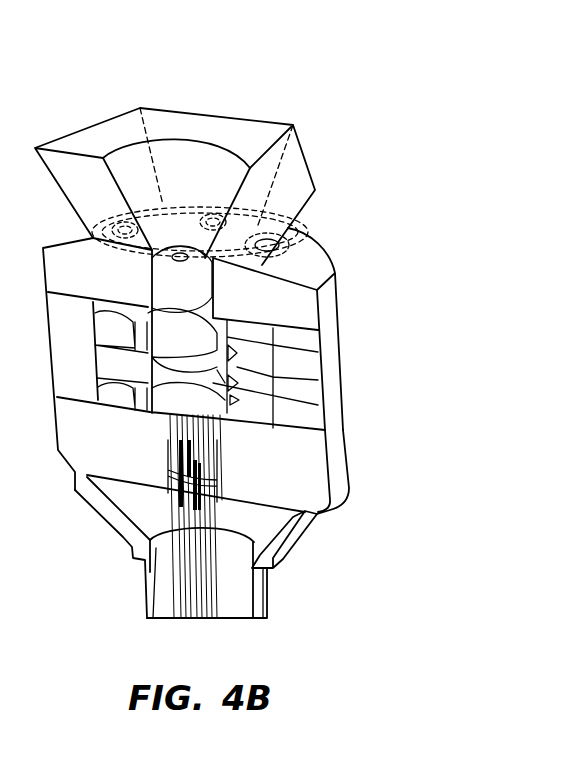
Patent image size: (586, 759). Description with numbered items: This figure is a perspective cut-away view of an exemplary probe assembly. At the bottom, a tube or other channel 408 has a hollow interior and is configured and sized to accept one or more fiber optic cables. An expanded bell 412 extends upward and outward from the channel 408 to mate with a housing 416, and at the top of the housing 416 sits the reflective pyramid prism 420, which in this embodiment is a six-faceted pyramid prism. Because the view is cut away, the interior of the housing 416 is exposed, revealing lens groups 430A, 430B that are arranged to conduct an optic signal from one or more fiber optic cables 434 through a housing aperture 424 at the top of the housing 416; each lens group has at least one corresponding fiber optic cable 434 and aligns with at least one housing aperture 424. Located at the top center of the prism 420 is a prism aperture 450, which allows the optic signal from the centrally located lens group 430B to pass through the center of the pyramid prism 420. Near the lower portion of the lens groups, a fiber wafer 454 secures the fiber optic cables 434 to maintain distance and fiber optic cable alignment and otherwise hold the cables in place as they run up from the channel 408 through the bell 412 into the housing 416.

The tube or other channel 408 is at (267, 603).
The expanded bell 412 is at (305, 540).
The housing 416 is at (312, 262).
The reflective pyramid prism 420 is at (305, 153).
The housing aperture 424 is at (312, 247).
The lens group 430A is at (260, 348).
The lens group 430B is at (318, 405).
The fiber optic cable 434 is at (236, 530).
The prism aperture 450 is at (175, 138).
The fiber wafer 454 is at (167, 427).